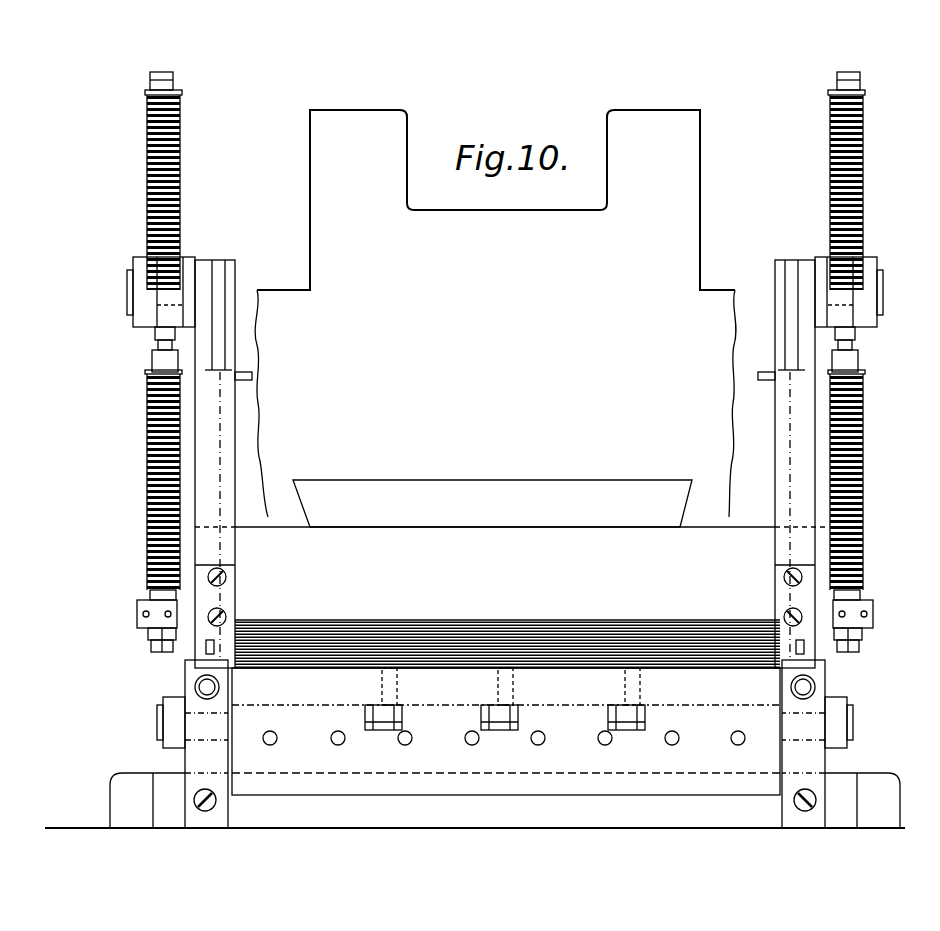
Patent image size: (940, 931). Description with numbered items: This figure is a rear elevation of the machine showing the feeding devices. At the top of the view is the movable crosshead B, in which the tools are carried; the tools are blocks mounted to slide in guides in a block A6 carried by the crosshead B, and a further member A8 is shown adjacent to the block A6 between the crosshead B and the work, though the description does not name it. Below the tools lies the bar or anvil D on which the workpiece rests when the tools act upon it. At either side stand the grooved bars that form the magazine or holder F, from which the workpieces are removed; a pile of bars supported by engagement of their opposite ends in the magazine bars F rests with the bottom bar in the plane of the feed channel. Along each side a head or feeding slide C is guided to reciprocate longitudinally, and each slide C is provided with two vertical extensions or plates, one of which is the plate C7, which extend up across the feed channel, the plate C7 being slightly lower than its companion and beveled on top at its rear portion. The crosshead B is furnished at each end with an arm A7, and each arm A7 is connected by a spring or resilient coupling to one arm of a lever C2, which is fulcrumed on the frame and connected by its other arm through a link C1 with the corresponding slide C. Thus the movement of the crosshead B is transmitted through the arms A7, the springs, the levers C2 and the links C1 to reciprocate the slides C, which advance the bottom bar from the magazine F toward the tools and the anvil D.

The movable crosshead B is at (495, 313).
The magazine F is at (232, 340).
The feeding block C is at (197, 280).
The link C1 is at (862, 708).
The lever C2 is at (872, 562).
The plate C7 is at (858, 664).
The arm A7 is at (856, 644).
The blade A8 is at (492, 503).
The block A6 is at (510, 597).
The bar or anvil D is at (506, 731).